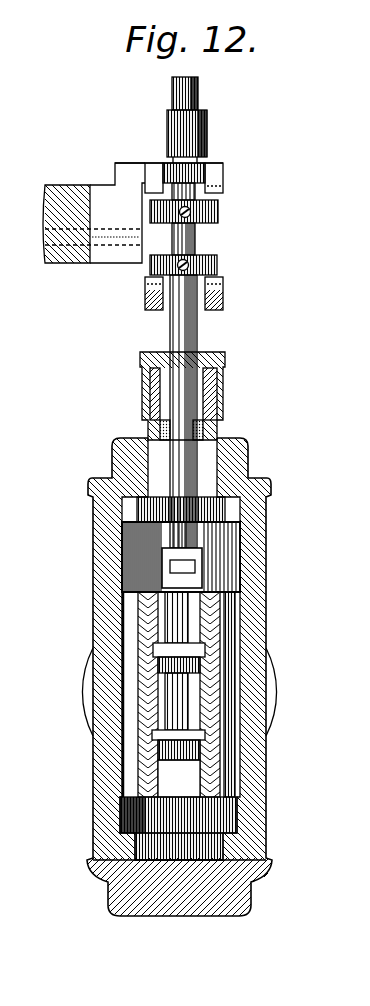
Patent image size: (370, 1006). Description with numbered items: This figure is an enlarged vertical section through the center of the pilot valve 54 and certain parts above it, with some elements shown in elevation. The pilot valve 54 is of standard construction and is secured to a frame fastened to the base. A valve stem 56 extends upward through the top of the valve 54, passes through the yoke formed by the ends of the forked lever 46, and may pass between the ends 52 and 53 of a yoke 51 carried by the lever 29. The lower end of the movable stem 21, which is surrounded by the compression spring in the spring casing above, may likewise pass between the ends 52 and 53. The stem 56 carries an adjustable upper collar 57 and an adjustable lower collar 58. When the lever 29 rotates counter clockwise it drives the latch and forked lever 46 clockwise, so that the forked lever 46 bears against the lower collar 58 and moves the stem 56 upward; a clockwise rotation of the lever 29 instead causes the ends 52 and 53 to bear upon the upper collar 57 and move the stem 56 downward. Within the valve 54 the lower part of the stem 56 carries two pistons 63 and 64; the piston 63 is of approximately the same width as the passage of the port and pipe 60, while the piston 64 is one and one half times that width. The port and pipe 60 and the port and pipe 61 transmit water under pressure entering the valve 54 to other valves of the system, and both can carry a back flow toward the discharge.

The stem 21 is at (200, 100).
The lever 29 is at (65, 258).
The forked lever 46 is at (147, 302).
The yoke 51 is at (130, 210).
The yoke end 52 is at (140, 185).
The yoke end 53 is at (215, 188).
The pilot valve 54 is at (257, 822).
The valve stem 56 is at (197, 243).
The upper collar 57 is at (218, 213).
The lower collar 58 is at (217, 265).
The port and pipe 60 is at (155, 650).
The port and pipe 61 is at (160, 735).
The piston 63 is at (203, 667).
The piston 64 is at (232, 745).